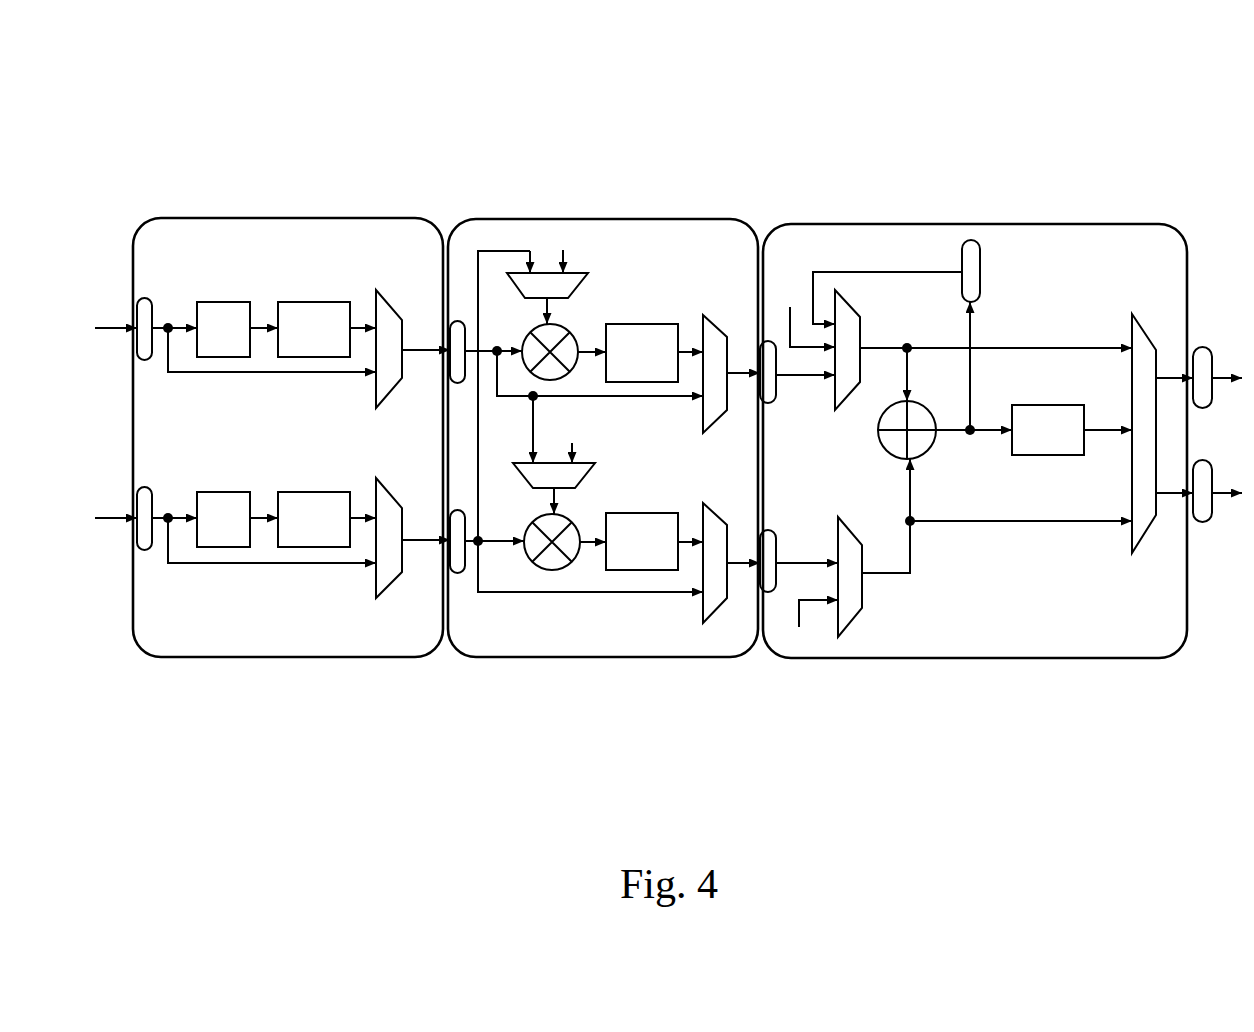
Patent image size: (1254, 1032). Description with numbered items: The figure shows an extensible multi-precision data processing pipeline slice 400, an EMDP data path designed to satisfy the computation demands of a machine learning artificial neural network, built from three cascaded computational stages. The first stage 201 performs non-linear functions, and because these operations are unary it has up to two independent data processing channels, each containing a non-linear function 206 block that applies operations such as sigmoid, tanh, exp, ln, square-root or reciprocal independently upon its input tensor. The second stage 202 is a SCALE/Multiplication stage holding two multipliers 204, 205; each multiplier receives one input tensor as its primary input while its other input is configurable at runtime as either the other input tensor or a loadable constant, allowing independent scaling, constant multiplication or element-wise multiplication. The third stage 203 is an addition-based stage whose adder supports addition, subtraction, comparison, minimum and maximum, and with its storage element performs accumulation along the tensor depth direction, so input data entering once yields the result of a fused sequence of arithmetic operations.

The extensible multi-precision data processing pipeline slice 400 is at (278, 122).
The first stage 201 is at (347, 258).
The second stage 202 is at (693, 243).
The third stage 203 is at (908, 243).
The multiplier 204 is at (578, 326).
The multiplier 205 is at (574, 520).
The non-linear function 206 is at (247, 302).